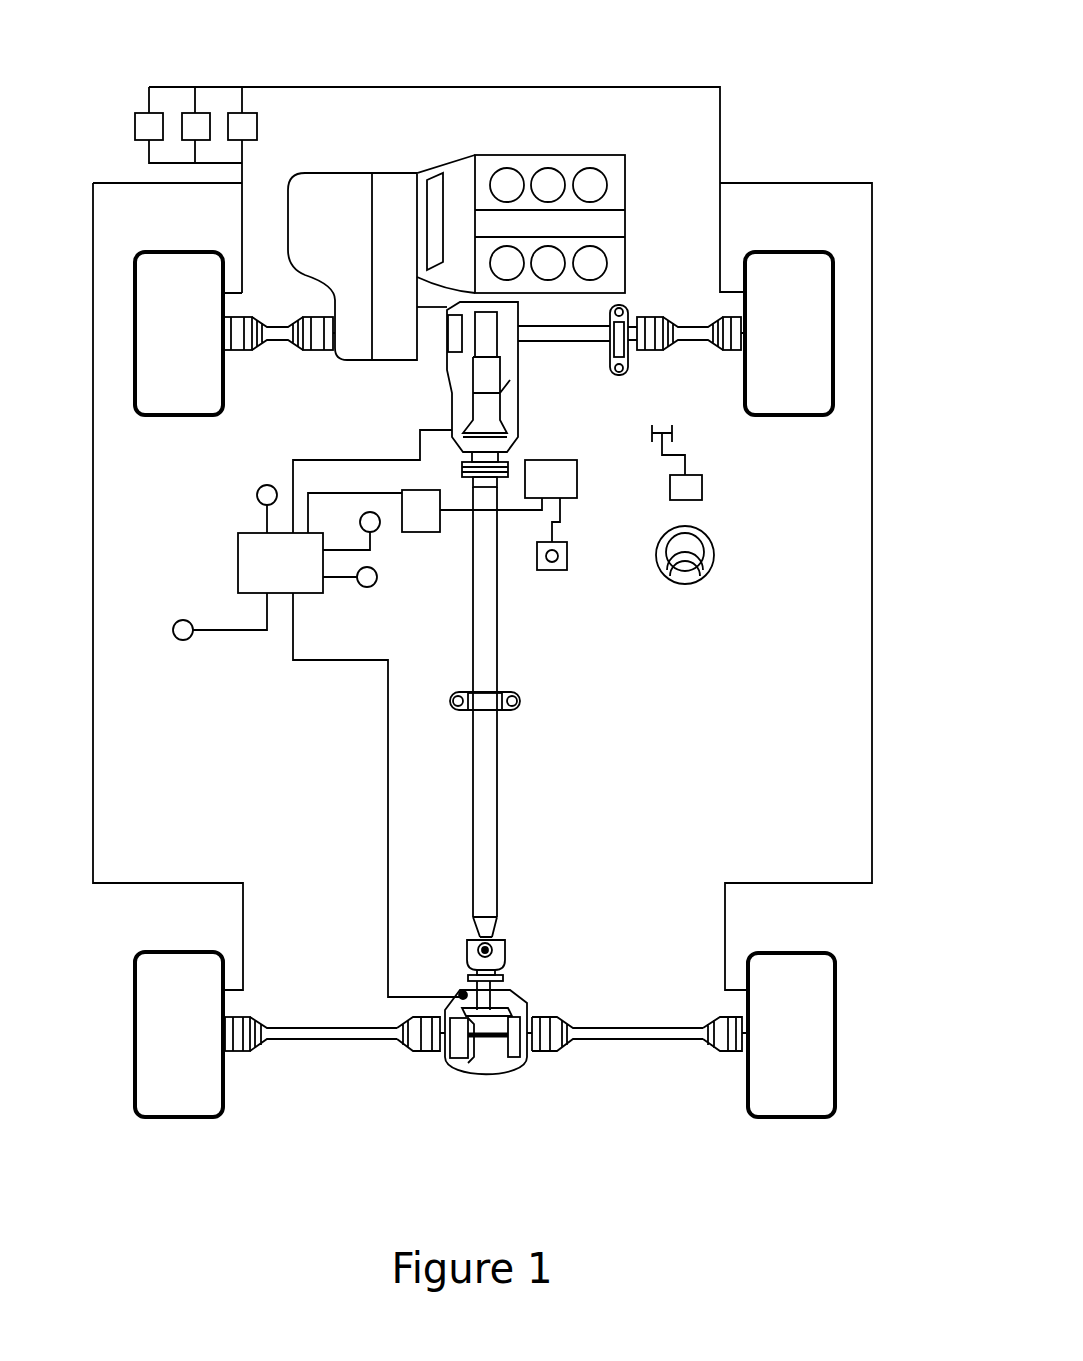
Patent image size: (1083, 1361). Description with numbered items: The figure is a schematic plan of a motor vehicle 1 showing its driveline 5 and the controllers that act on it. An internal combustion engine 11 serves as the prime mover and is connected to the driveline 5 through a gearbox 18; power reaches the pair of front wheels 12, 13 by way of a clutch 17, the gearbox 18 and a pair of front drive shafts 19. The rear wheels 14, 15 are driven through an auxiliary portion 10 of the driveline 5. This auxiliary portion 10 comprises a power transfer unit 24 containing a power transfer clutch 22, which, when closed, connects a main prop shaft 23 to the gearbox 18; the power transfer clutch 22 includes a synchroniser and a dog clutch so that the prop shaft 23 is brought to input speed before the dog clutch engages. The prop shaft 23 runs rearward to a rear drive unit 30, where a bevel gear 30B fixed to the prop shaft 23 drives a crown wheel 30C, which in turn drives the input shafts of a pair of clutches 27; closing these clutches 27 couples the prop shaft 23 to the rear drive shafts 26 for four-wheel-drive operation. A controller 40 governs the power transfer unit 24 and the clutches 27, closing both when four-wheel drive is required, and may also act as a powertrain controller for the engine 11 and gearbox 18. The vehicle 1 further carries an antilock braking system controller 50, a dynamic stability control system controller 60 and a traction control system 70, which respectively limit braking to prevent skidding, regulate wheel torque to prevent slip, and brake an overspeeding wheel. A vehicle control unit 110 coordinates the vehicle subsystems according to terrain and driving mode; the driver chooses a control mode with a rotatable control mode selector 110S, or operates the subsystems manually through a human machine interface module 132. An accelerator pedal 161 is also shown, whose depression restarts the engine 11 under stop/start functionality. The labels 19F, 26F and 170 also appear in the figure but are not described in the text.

The motor vehicle 1 is at (740, 61).
The driveline 5 is at (302, 758).
The auxiliary portion 10 is at (520, 408).
The internal combustion engine 11 is at (618, 172).
The front wheel 12 is at (173, 268).
The front wheel 13 is at (797, 268).
The rear wheel 14 is at (183, 1098).
The rear wheel 15 is at (787, 1100).
The clutch 17 is at (470, 233).
The gearbox 18 is at (393, 197).
The front drive shafts 19 is at (278, 337).
The front axle 19F is at (697, 292).
The power transfer clutch 22 is at (455, 335).
The prop shaft 23 is at (483, 637).
The power transfer unit 24 is at (518, 388).
The rear drive shafts 26 is at (345, 1033).
The rear axle 26F is at (610, 1088).
The clutches 27 is at (457, 1048).
The rear drive unit 30 is at (495, 1073).
The bevel gear 30B is at (498, 1013).
The crown wheel 30C is at (470, 1048).
The controller 40 is at (238, 563).
The antilock braking system controller 50 is at (192, 120).
The dynamic stability control system controller 60 is at (245, 120).
The traction control system 70 is at (140, 123).
The vehicle control unit 110 is at (422, 532).
The control mode selector 110S is at (557, 572).
The human machine interface module 132 is at (567, 491).
The accelerator pedal 161 is at (702, 488).
The steering wheel 170 is at (702, 571).